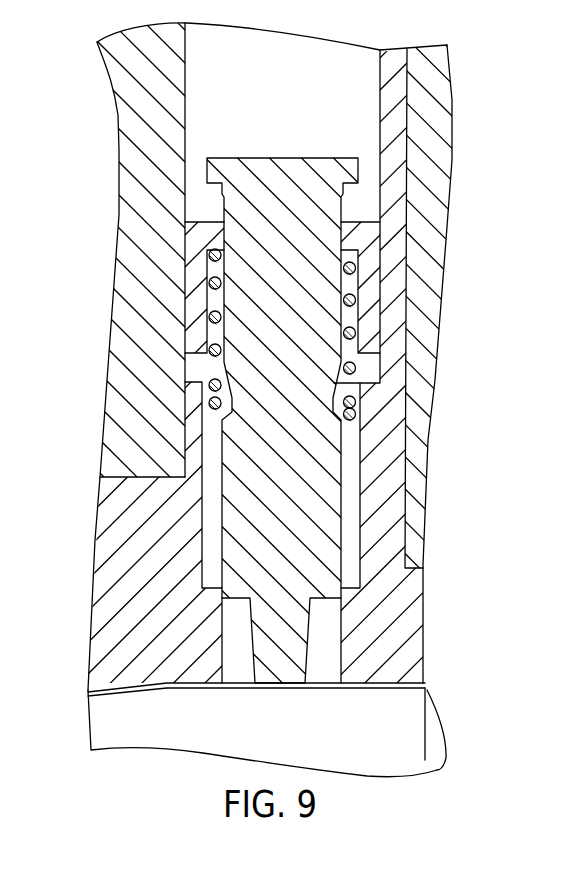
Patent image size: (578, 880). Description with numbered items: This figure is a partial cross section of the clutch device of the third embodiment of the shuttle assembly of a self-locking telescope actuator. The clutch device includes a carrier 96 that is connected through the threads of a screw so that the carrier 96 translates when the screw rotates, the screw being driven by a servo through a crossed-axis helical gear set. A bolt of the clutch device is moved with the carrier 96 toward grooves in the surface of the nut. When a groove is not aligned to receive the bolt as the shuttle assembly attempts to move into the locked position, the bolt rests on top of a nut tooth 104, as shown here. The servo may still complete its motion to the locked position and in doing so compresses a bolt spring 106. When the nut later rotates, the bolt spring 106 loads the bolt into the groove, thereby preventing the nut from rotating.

The carrier 96 is at (383, 306).
The bolt spring 106 is at (355, 407).
The nut tooth 104 is at (119, 697).